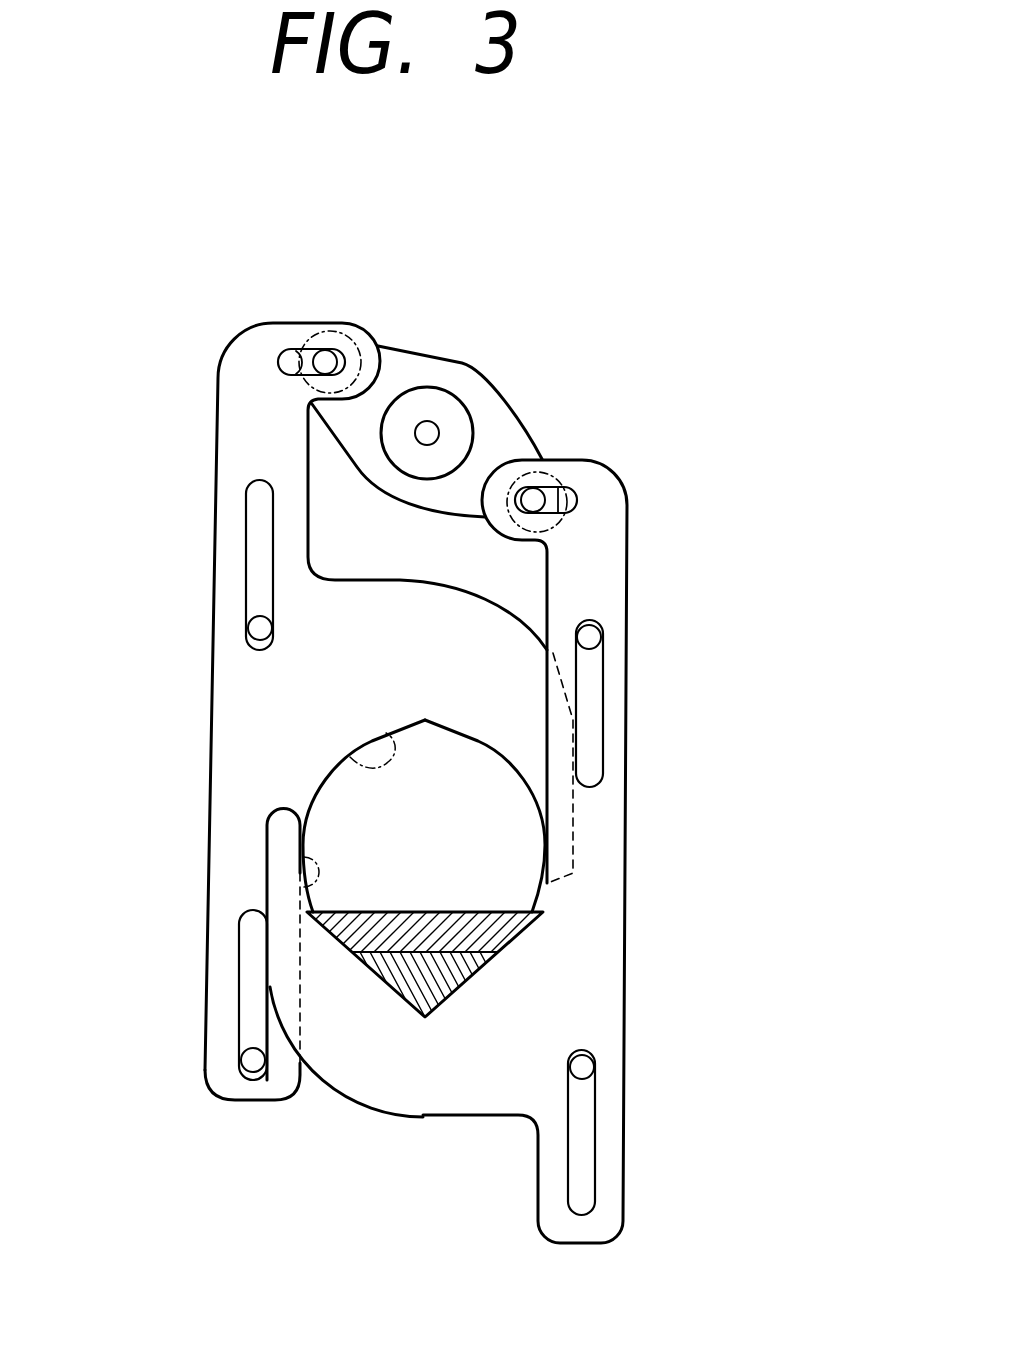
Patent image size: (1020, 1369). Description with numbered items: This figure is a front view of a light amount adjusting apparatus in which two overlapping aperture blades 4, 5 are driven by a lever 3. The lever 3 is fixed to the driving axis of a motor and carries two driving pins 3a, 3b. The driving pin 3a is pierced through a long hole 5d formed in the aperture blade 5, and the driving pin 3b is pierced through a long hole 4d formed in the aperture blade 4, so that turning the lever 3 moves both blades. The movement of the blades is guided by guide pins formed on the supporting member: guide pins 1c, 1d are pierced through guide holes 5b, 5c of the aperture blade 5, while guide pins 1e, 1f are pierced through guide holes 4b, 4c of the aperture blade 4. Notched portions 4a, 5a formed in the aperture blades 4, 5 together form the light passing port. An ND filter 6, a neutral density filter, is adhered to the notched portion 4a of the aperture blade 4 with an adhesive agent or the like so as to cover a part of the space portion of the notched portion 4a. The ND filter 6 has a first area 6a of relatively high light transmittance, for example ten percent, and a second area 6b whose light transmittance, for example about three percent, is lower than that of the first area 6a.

The lever 3 is at (468, 362).
The driving pin 3a is at (342, 348).
The driving pin 3b is at (550, 487).
The aperture blade 4 is at (627, 493).
The notched portion 4a is at (300, 866).
The guide hole 4b is at (612, 723).
The guide hole 4c is at (590, 1163).
The long hole 4d is at (583, 488).
The aperture blade 5 is at (228, 352).
The notched portion 5a is at (352, 758).
The guide hole 5b is at (260, 507).
The guide hole 5c is at (250, 963).
The long hole 5d is at (276, 349).
The guide pin 1c is at (258, 628).
The guide pin 1d is at (245, 1060).
The guide pin 1e is at (600, 633).
The guide pin 1f is at (600, 1060).
The ND filter 6 is at (386, 1000).
The first area 6a is at (480, 905).
The second area 6b is at (455, 990).